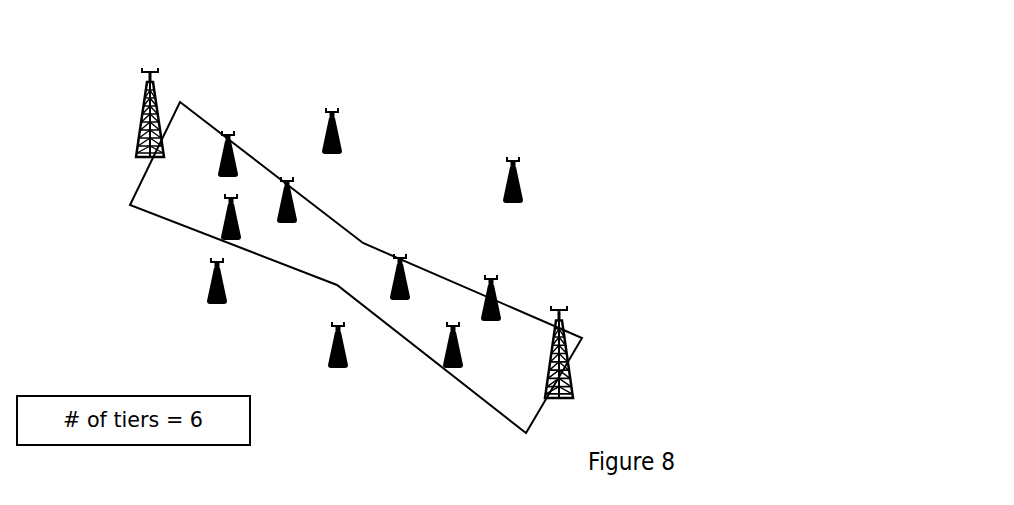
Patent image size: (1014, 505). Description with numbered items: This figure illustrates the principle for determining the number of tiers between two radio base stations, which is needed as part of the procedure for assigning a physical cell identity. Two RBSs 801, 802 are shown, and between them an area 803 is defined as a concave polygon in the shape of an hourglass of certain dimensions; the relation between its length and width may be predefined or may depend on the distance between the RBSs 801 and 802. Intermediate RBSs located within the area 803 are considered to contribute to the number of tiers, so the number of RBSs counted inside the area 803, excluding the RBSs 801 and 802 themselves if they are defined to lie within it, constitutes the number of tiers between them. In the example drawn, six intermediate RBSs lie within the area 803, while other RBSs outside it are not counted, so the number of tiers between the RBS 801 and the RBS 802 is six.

The RBS 801 is at (140, 113).
The RBS 802 is at (568, 358).
The area 803 is at (188, 198).